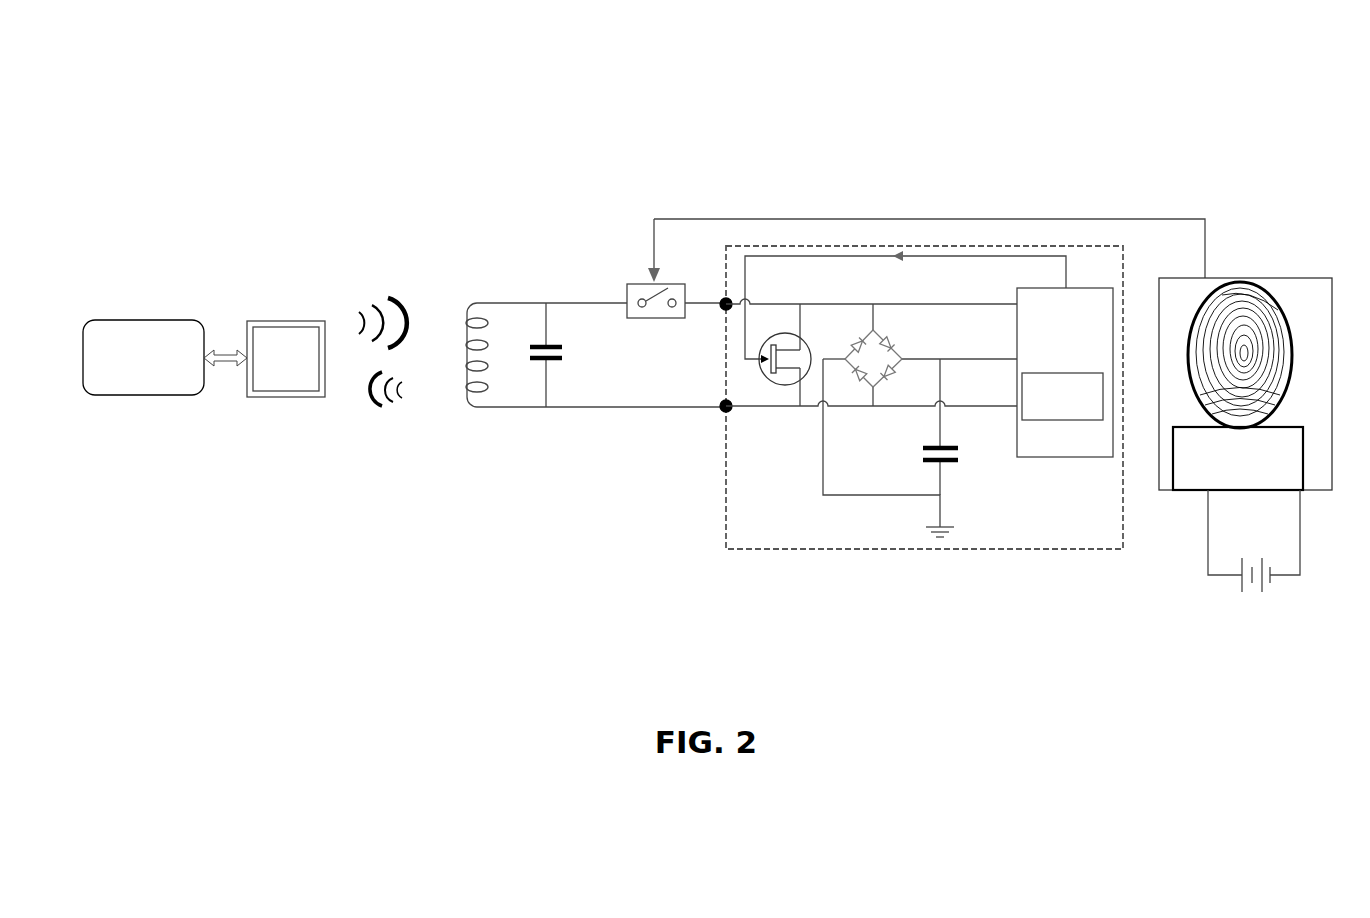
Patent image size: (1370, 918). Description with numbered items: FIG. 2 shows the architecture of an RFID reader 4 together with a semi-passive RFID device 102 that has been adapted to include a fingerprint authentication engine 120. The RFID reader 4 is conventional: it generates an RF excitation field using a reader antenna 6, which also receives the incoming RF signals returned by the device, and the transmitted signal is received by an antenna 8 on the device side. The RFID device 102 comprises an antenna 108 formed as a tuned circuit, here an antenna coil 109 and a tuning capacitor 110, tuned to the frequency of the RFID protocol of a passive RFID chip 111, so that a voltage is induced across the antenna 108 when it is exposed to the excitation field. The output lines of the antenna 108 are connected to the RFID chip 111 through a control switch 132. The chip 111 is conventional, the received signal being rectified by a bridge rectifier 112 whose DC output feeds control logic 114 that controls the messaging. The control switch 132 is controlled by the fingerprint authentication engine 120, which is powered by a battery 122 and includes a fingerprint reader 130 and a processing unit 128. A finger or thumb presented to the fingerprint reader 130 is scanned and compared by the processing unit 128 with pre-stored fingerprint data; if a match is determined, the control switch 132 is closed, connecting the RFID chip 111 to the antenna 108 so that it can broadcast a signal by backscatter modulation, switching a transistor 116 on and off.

The RFID reader 4 is at (164, 198).
The antenna 8 is at (138, 396).
The reader antenna 6 is at (290, 397).
The antenna coil 109 is at (465, 330).
The antenna 108 is at (505, 325).
The tuning capacitor 110 is at (537, 343).
The control switch 132 is at (635, 282).
The passive RFID chip 111 is at (723, 258).
The transistor 116 is at (775, 333).
The rectifier bridge 112 is at (865, 337).
The controller / memory 114 is at (1077, 288).
The semi-passive RFID device 102 is at (1046, 154).
The fingerprint authentication engine 120 is at (1218, 276).
The fingerprint reader 130 is at (1275, 300).
The processing unit 128 is at (1190, 468).
The battery 122 is at (1240, 590).